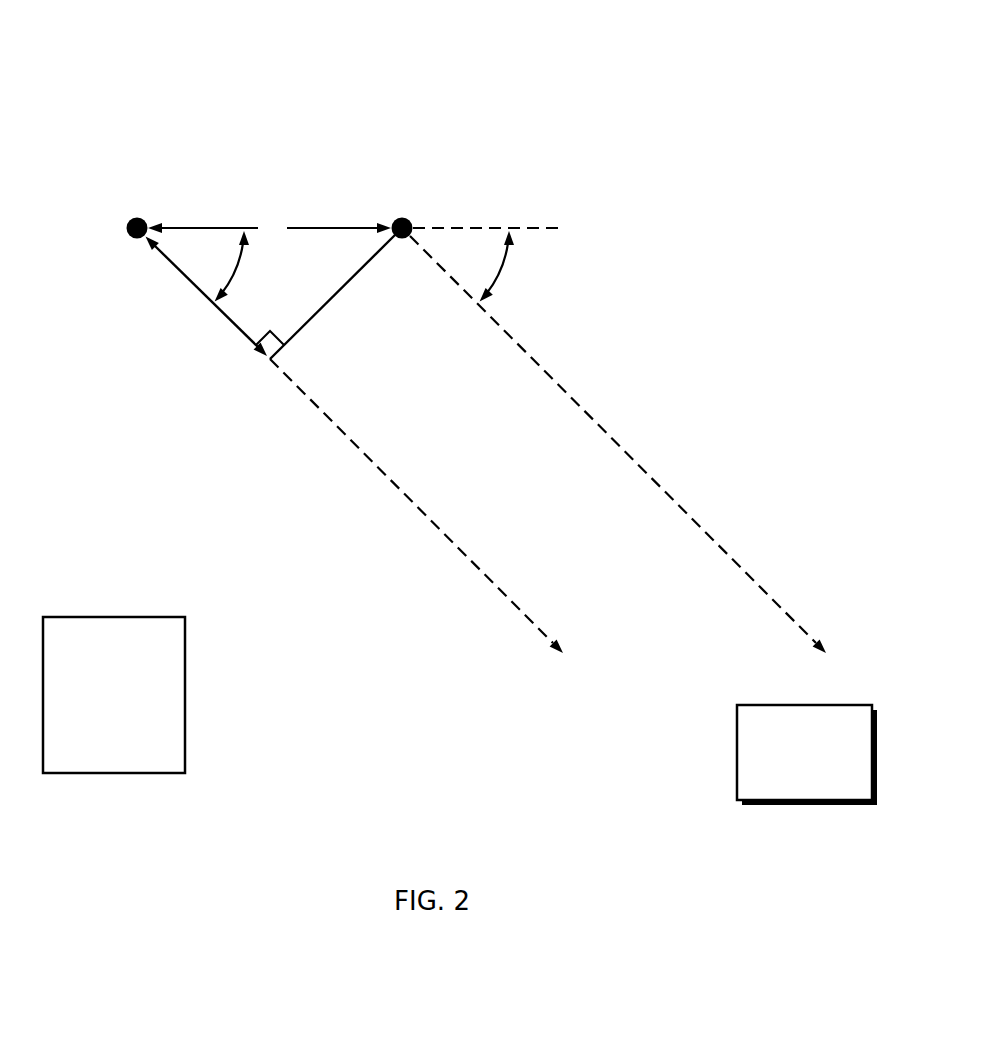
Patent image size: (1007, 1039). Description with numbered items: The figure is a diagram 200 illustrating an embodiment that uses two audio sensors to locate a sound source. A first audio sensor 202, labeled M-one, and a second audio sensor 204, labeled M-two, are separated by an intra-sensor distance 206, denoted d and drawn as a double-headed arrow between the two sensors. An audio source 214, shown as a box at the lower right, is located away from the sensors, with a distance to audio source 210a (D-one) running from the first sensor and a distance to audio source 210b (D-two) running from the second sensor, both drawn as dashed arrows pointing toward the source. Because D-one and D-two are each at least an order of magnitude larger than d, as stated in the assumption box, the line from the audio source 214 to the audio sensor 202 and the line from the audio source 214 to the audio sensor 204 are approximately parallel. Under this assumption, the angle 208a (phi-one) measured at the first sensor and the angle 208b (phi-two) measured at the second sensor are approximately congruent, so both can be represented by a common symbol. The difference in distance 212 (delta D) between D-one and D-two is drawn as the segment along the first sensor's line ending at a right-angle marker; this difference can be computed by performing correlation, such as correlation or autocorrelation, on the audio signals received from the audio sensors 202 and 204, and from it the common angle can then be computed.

The diagram 200 is at (675, 33).
The audio sensor 202 is at (83, 174).
The audio sensor 204 is at (459, 174).
The intra-sensor distance 206 is at (269, 201).
The angle 208a is at (267, 276).
The angle 208b is at (531, 276).
The distance to audio source 210a is at (404, 506).
The distance to audio source 210b is at (618, 444).
The difference in distance 212 is at (148, 298).
The audio source 214 is at (737, 748).